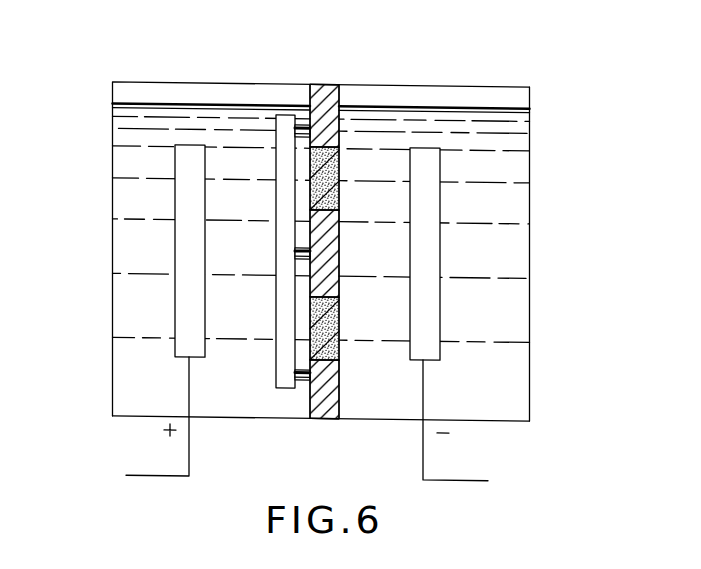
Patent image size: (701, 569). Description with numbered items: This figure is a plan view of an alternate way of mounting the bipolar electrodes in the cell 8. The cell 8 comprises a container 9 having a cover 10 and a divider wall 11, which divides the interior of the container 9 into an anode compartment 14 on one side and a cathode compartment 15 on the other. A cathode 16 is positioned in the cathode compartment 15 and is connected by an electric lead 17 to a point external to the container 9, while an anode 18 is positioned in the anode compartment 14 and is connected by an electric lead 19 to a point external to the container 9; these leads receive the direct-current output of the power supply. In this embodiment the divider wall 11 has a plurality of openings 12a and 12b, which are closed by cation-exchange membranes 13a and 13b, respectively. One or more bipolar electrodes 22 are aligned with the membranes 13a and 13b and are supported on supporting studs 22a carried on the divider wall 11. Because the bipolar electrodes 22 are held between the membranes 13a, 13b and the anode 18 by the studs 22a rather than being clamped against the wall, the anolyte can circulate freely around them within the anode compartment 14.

The cell 8 is at (545, 198).
The container 9 is at (513, 416).
The cover 10 is at (210, 79).
The divider wall 11 is at (352, 83).
The opening 12a is at (340, 156).
The opening 12b is at (340, 301).
The cation-exchange membrane 13a is at (340, 194).
The cation-exchange membrane 13b is at (340, 336).
The anode compartment 14 is at (128, 308).
The cathode compartment 15 is at (498, 97).
The cathode 16 is at (428, 253).
The electric lead 17 is at (450, 476).
The anode 18 is at (189, 238).
The electric lead 19 is at (162, 475).
The bipolar electrode 22 is at (282, 182).
The supporting stud 22a is at (298, 120).